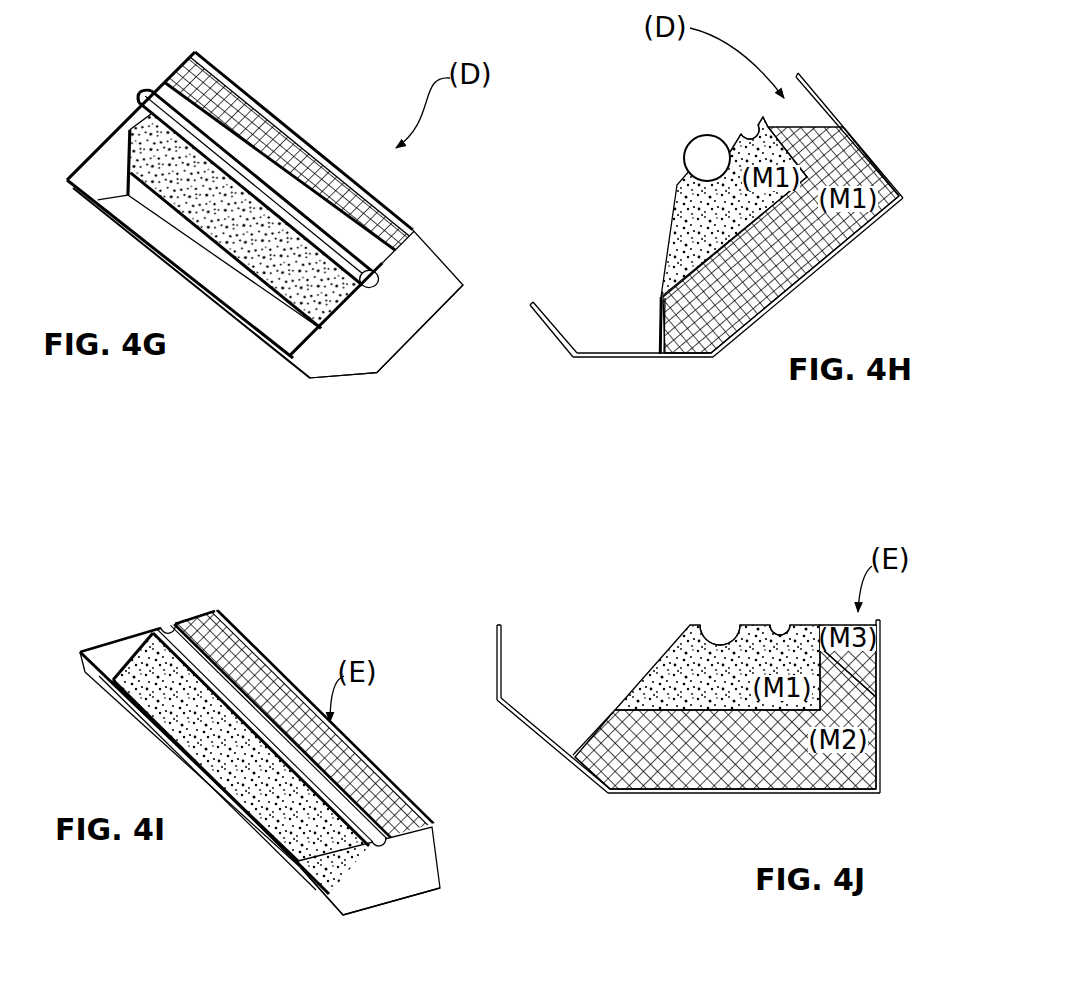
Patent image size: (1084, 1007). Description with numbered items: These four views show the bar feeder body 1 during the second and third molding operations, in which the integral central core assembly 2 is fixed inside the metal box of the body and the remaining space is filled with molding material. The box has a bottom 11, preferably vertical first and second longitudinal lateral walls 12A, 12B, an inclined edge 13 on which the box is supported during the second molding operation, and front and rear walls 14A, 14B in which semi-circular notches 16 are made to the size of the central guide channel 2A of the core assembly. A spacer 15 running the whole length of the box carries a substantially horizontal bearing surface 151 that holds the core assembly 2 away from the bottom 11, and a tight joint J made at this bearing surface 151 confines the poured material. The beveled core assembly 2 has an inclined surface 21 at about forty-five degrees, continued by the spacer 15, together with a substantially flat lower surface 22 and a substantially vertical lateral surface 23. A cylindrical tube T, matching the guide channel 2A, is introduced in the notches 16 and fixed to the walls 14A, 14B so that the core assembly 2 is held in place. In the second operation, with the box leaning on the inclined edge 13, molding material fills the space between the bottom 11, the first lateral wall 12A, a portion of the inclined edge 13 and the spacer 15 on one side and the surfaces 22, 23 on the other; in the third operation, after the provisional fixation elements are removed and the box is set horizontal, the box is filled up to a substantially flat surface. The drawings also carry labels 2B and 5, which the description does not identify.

In FIG. 4I, the body 1 is at (402, 776).
In FIG. 4J, the body 1 is at (661, 822).
In FIG. 4G, the integral central core assembly 2 is at (240, 197).
In FIG. 4H, the integral central core assembly 2 is at (738, 202).
In FIG. 4I, the integral central core assembly 2 is at (237, 727).
In FIG. 4J, the integral central core assembly 2 is at (725, 647).
In FIG. 4I, the central guide channel 2A is at (235, 676).
In FIG. 4J, the central guide channel 2A is at (724, 641).
In FIG. 4G, the notch 2B is at (300, 146).
In FIG. 4H, the notch 2B is at (752, 132).
In FIG. 4I, the notch 2B is at (190, 615).
In FIG. 4J, the notch 2B is at (790, 632).
In FIG. 4G, the mold assembly 5 is at (222, 316).
In FIG. 4G, the bottom 11 is at (413, 343).
In FIG. 4H, the bottom 11 is at (814, 273).
In FIG. 4I, the bottom 11 is at (393, 897).
In FIG. 4J, the bottom 11 is at (816, 795).
In FIG. 4G, the first longitudinal lateral wall 12A is at (396, 190).
In FIG. 4H, the first longitudinal lateral wall 12A is at (845, 126).
In FIG. 4I, the first longitudinal lateral wall 12A is at (439, 848).
In FIG. 4J, the first longitudinal lateral wall 12A is at (496, 640).
In FIG. 4G, the second longitudinal lateral wall 12B is at (278, 350).
In FIG. 4H, the second longitudinal lateral wall 12B is at (555, 335).
In FIG. 4I, the second longitudinal lateral wall 12B is at (278, 868).
In FIG. 4J, the second longitudinal lateral wall 12B is at (882, 794).
In FIG. 4G, the inclined edge 13 is at (360, 378).
In FIG. 4H, the inclined edge 13 is at (634, 358).
In FIG. 4I, the inclined edge 13 is at (323, 905).
In FIG. 4J, the inclined edge 13 is at (561, 742).
In FIG. 4G, the front wall 14A is at (451, 270).
In FIG. 4I, the front wall 14A is at (362, 895).
In FIG. 4G, the rear wall 14B is at (104, 136).
In FIG. 4I, the rear wall 14B is at (106, 640).
In FIG. 4H, the spacer 15 is at (660, 331).
In FIG. 4I, the spacer 15 is at (228, 758).
In FIG. 4J, the spacer 15 is at (598, 742).
In FIG. 4G, the bearing surface 151 is at (220, 262).
In FIG. 4H, the bearing surface 151 is at (665, 300).
In FIG. 4J, the bearing surface 151 is at (612, 711).
In FIG. 4G, the notches 16 is at (379, 287).
In FIG. 4I, the notches 16 is at (166, 622).
In FIG. 4G, the inclined surface 21 is at (205, 203).
In FIG. 4H, the inclined surface 21 is at (668, 240).
In FIG. 4I, the inclined surface 21 is at (220, 726).
In FIG. 4J, the inclined surface 21 is at (657, 668).
In FIG. 4H, the lower surface 22 is at (732, 236).
In FIG. 4H, the lateral surface 23 is at (734, 138).
In FIG. 4G, the tube T is at (207, 118).
In FIG. 4H, the tube T is at (688, 143).
In FIG. 4H, the tight joint J is at (664, 296).
In FIG. 4I, the tight joint J is at (262, 812).
In FIG. 4J, the tight joint J is at (617, 709).